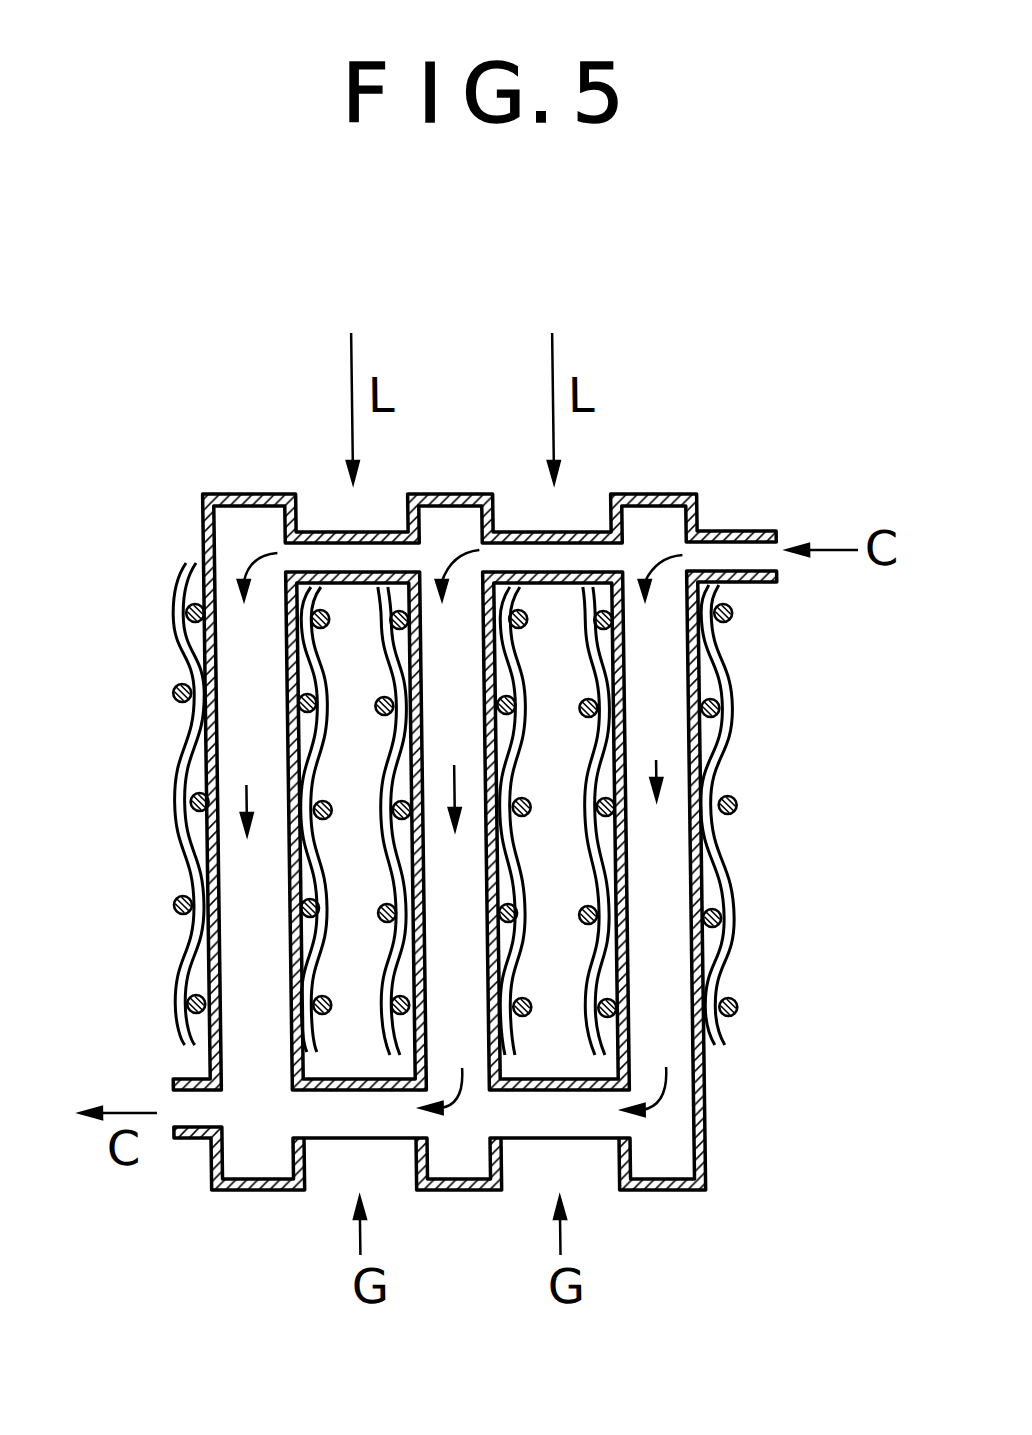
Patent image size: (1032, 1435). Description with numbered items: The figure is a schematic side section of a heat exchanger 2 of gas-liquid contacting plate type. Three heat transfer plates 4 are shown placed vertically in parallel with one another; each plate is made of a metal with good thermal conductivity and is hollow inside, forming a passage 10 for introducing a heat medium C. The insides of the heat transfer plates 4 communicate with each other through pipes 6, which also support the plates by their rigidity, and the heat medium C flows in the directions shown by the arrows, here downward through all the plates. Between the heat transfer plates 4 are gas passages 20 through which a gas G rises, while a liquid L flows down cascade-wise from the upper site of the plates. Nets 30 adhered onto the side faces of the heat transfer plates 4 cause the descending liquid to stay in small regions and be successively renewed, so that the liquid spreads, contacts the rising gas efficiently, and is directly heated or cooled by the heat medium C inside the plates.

The heat exchanger 2 is at (455, 778).
The heat transfer plate 4 is at (249, 1191).
The pipe 6 is at (588, 531).
The passage 10 is at (651, 932).
The gas passage 20 is at (345, 857).
The net 30 is at (172, 690).